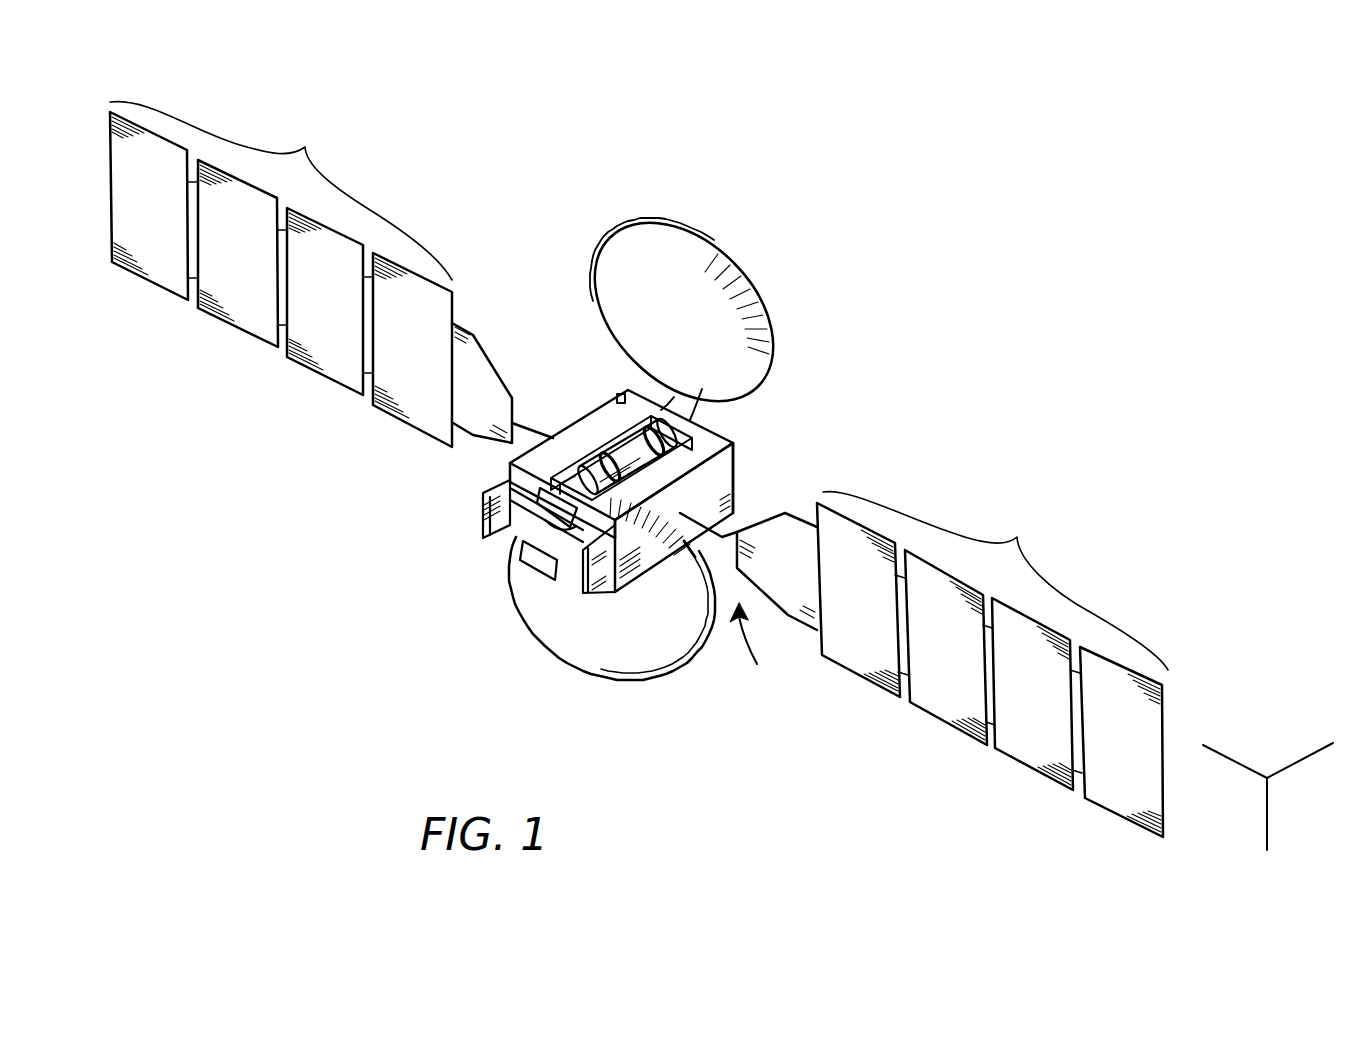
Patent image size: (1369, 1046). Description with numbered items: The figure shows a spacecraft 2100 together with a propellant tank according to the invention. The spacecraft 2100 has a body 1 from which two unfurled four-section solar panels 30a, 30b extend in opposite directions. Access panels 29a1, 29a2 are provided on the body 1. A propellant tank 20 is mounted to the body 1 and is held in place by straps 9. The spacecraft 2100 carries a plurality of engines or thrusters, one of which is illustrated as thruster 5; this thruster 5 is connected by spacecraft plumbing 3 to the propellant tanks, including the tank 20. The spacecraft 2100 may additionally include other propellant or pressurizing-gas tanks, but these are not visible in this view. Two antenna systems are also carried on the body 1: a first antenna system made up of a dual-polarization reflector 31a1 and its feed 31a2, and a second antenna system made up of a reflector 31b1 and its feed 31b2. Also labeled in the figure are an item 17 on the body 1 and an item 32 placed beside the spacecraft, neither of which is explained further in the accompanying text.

The solar panel 30a is at (331, 274).
The solar panel 30b is at (924, 664).
The dual-polarization reflector 31a1 is at (717, 267).
The feed 31a2 is at (510, 467).
The reflector 31b1 is at (643, 648).
The feed 31b2 is at (537, 557).
The access panel 29a1 is at (687, 457).
The access panel 29a2 is at (578, 433).
The spacecraft plumbing 3 is at (568, 483).
The engine or thruster 5 is at (617, 395).
The straps 9 is at (657, 430).
The propellant tank 20 is at (683, 433).
The front panel of spacecraft body 17 is at (703, 493).
The body 1 is at (763, 707).
The spacecraft 2100 is at (193, 525).
The coordinate axes 32 is at (1282, 789).